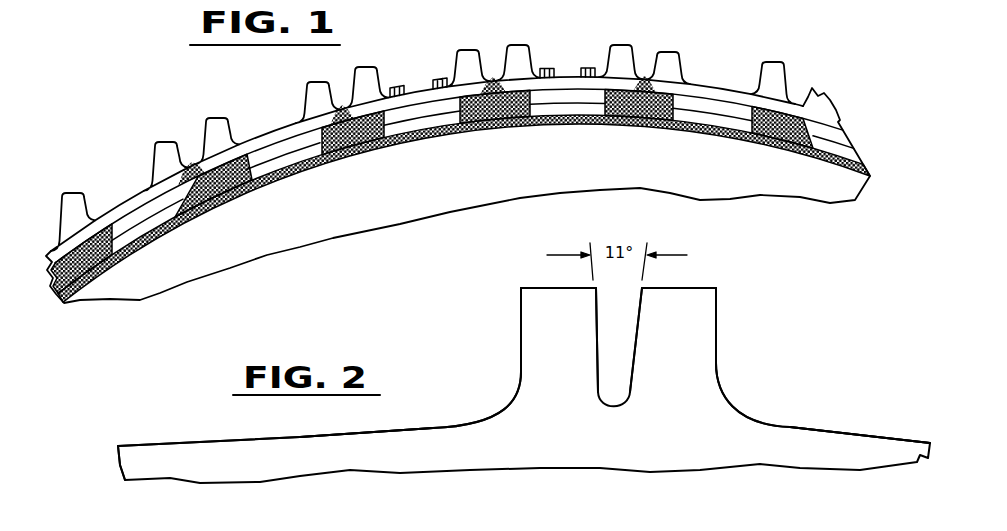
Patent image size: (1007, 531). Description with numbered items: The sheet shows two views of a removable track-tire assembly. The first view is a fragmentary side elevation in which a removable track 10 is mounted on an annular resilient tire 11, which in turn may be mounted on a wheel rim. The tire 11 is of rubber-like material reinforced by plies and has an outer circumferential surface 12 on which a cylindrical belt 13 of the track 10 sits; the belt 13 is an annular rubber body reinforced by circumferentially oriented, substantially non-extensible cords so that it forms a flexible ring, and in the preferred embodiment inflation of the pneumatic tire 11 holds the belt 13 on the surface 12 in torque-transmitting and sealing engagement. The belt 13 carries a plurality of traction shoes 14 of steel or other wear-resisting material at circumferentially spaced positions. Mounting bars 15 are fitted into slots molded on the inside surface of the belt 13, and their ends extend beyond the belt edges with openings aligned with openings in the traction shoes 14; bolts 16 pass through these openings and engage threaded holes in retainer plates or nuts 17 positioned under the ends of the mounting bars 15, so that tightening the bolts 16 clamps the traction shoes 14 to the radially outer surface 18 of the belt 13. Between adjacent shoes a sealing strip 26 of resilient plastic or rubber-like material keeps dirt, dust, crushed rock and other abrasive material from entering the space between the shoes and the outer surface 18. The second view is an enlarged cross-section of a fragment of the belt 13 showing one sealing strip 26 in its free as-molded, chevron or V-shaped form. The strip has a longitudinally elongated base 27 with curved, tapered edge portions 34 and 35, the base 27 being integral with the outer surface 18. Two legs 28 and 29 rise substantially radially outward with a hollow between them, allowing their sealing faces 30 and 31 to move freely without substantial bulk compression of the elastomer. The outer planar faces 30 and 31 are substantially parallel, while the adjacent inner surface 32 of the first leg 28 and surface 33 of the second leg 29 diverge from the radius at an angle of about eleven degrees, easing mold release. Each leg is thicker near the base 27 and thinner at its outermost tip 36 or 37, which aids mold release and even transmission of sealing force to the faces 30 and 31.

In FIG. 1, the removable track 10 is at (205, 115).
In FIG. 1, the tire 11 is at (830, 190).
In FIG. 1, the outer circumferential surface 12 is at (124, 253).
In FIG. 1, the belt 13 is at (52, 281).
In FIG. 2, the belt 13 is at (165, 452).
In FIG. 1, the traction shoes 14 is at (122, 207).
In FIG. 1, the mounting bars 15 is at (660, 103).
In FIG. 1, the bolts 16 is at (438, 79).
In FIG. 1, the retainer plates or nuts 17 is at (553, 98).
In FIG. 2, the radially outer surface 18 is at (213, 441).
In FIG. 2, the sealing strip 26 is at (658, 442).
In FIG. 2, the base 27 is at (543, 420).
In FIG. 2, the first leg 28 is at (540, 365).
In FIG. 2, the second leg 29 is at (698, 377).
In FIG. 2, the sealing face 30 is at (520, 313).
In FIG. 2, the sealing face 31 is at (717, 308).
In FIG. 2, the surface of the first leg 32 is at (598, 330).
In FIG. 2, the surface of the second leg 33 is at (640, 328).
In FIG. 2, the curved edge tapered portion 34 is at (447, 440).
In FIG. 2, the curved edge tapered portion 35 is at (797, 445).
In FIG. 2, the outermost tip 36 is at (533, 286).
In FIG. 2, the outermost tip 37 is at (697, 286).